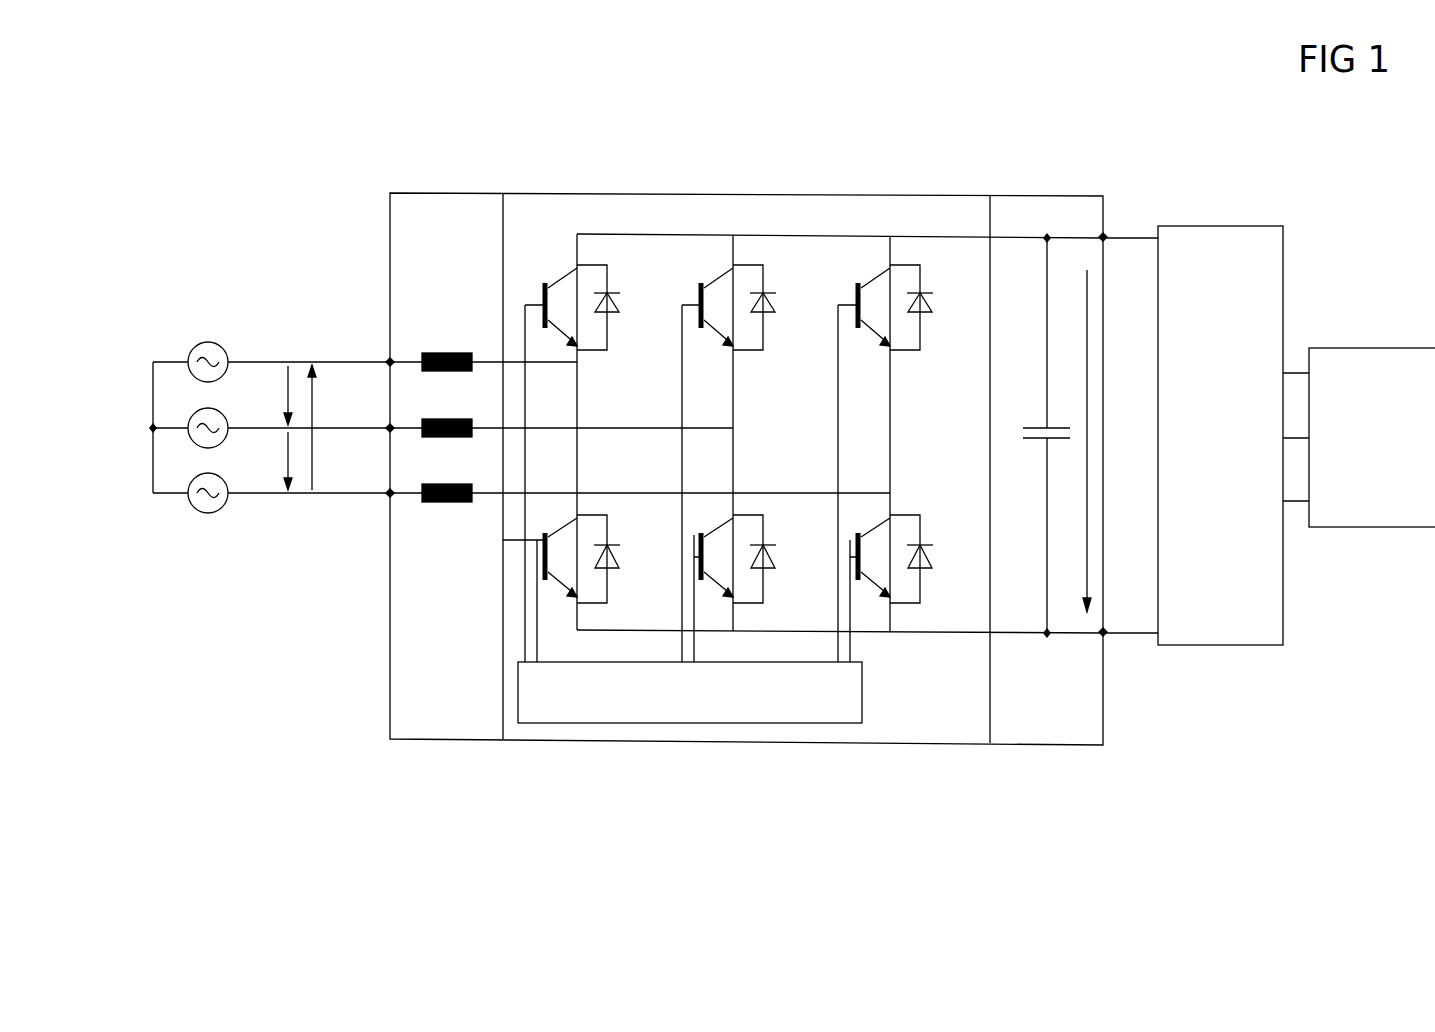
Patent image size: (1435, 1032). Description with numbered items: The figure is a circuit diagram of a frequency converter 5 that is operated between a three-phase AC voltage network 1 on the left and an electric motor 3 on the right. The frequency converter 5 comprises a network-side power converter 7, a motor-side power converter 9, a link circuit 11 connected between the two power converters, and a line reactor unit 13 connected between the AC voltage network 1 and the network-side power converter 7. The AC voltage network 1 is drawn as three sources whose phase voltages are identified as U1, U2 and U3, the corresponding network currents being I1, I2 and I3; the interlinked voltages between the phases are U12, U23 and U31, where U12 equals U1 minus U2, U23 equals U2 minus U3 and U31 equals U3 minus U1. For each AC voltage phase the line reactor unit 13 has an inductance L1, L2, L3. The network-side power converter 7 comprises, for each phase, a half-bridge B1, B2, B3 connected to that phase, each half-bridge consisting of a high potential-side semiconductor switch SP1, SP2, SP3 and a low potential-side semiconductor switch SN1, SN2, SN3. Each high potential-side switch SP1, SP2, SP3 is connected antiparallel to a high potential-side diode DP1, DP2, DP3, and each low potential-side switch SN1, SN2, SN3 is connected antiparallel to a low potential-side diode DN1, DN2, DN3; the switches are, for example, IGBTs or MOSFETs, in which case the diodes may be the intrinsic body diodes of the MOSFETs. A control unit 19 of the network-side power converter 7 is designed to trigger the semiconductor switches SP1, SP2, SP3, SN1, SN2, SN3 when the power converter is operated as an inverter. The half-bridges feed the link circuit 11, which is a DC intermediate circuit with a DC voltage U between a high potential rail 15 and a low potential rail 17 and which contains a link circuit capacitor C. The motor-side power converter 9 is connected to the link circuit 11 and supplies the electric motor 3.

The three-phase AC voltage network 1 is at (229, 236).
The electric motor 3 is at (1365, 528).
The frequency converter 5 is at (1100, 785).
The network-side power converter 7 is at (913, 745).
The motor-side power converter 9 is at (1225, 646).
The link circuit 11 is at (1062, 568).
The line reactor unit 13 is at (445, 740).
The high potential rail 15 is at (962, 235).
The low potential rail 17 is at (948, 634).
The control unit 19 is at (680, 724).
The AC voltage of the first AC voltage phase U1 is at (198, 333).
The AC voltage of the second AC voltage phase U2 is at (198, 398).
The AC voltage of the third AC voltage phase U3 is at (198, 465).
The interlinked voltage U12 is at (280, 385).
The interlinked voltage U23 is at (280, 460).
The interlinked voltage U31 is at (320, 465).
The network current of the first AC voltage phase I1 is at (370, 357).
The network current of the second AC voltage phase I2 is at (370, 423).
The network current of the third AC voltage phase I3 is at (370, 488).
The inductance L1 is at (447, 352).
The inductance L2 is at (447, 419).
The inductance L3 is at (447, 484).
The half-bridge B1 is at (553, 388).
The half-bridge B2 is at (722, 388).
The half-bridge B3 is at (880, 388).
The high potential-side semiconductor switch SP1 is at (525, 290).
The high potential-side semiconductor switch SP2 is at (705, 290).
The high potential-side semiconductor switch SP3 is at (862, 290).
The low potential-side semiconductor switch SN1 is at (503, 540).
The low potential-side semiconductor switch SN2 is at (694, 535).
The low potential-side semiconductor switch SN3 is at (850, 540).
The high potential-side diode DP1 is at (620, 300).
The high potential-side diode DP2 is at (776, 300).
The high potential-side diode DP3 is at (933, 300).
The low potential-side diode DN1 is at (620, 552).
The low potential-side diode DN2 is at (776, 552).
The low potential-side diode DN3 is at (933, 552).
The link circuit capacitor C is at (1035, 455).
The DC voltage U is at (1078, 441).